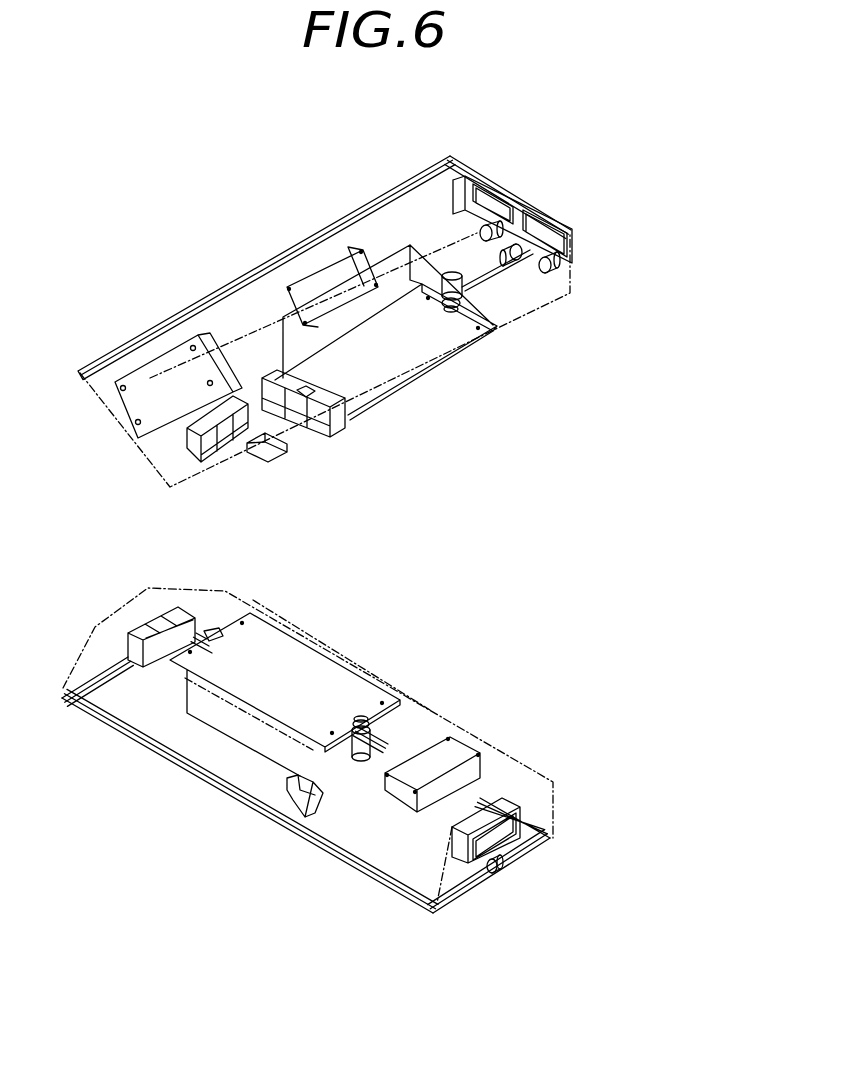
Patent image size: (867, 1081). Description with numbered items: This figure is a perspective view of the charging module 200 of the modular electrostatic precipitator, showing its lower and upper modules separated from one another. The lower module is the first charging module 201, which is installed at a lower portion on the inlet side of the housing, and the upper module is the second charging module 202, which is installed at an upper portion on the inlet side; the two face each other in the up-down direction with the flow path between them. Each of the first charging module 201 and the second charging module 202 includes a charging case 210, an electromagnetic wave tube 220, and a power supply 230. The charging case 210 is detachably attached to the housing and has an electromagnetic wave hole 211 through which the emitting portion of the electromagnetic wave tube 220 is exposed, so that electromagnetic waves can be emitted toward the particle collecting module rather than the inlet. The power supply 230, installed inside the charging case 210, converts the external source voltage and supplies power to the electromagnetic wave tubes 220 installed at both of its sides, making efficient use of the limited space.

The charging module 200 is at (605, 479).
The first charging module 201 is at (555, 623).
The second charging module 202 is at (635, 310).
The charging case 210 is at (530, 297).
The electromagnetic wave hole 211 is at (300, 387).
The electromagnetic wave tube 220 is at (457, 287).
The power supply 230 is at (413, 353).